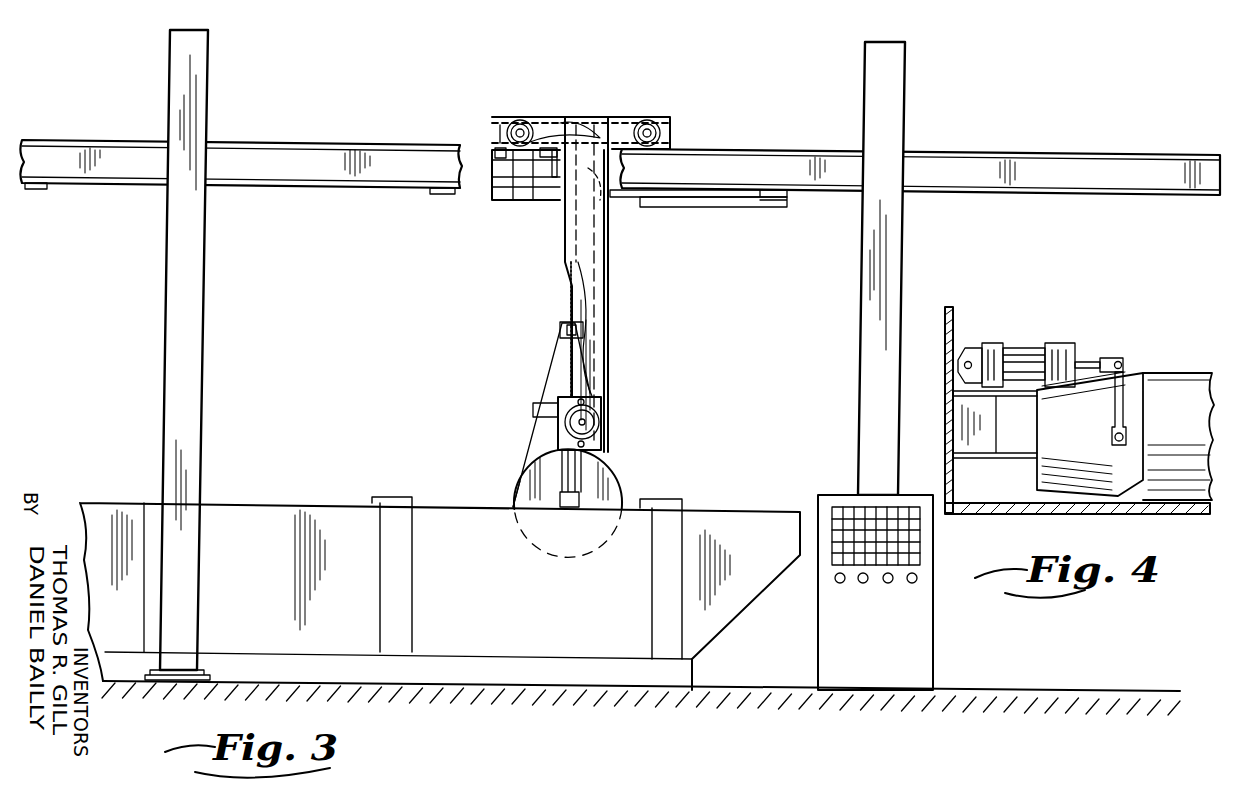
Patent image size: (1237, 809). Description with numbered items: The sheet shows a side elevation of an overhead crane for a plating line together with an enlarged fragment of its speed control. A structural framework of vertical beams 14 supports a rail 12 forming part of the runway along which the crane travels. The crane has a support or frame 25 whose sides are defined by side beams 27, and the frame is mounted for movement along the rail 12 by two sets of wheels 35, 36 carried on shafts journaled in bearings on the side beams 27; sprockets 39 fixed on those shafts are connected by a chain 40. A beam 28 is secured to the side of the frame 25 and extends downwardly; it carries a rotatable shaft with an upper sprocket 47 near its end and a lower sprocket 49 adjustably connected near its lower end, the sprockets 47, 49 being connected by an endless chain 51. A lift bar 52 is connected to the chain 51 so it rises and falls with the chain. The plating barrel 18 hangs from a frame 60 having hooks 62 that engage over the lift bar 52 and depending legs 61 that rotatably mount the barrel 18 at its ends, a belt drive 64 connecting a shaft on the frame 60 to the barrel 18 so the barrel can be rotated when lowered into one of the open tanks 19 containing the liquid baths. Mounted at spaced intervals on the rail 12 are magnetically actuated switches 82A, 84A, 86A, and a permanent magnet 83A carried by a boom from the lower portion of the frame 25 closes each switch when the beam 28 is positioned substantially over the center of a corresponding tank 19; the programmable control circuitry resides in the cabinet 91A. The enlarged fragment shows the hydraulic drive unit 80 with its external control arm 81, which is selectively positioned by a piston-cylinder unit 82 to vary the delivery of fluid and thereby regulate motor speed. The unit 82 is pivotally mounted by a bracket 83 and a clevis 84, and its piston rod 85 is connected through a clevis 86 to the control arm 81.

In FIG. 3, the vertical beams 14 is at (209, 76).
In FIG. 3, the rail 12 is at (742, 149).
In FIG. 3, the magnetically actuated switch 86A is at (36, 190).
In FIG. 3, the magnetically actuated switch 84A is at (445, 195).
In FIG. 3, the support or frame 25 is at (500, 117).
In FIG. 3, the wheels 36 is at (508, 129).
In FIG. 3, the wheels 35 is at (663, 131).
In FIG. 3, the sprockets 39 is at (522, 120).
In FIG. 3, the chain 40 is at (577, 125).
In FIG. 3, the magnetically actuated switch 82A is at (517, 156).
In FIG. 3, the control arm 81 is at (555, 178).
In FIG. 4, the control arm 81 is at (1114, 415).
In FIG. 3, the permanent magnet 83A is at (788, 205).
In FIG. 3, the beam 28 is at (613, 243).
In FIG. 3, the upper sprocket 47 is at (613, 215).
In FIG. 3, the endless chain 51 is at (571, 292).
In FIG. 3, the lift bar 52 is at (560, 328).
In FIG. 3, the hooks 62 is at (548, 366).
In FIG. 3, the belt drive 64 is at (528, 447).
In FIG. 3, the frame 60 is at (533, 410).
In FIG. 3, the lower sprocket 49 is at (605, 418).
In FIG. 3, the plating barrel 18 is at (603, 483).
In FIG. 3, the depending legs 61 is at (583, 508).
In FIG. 3, the tanks 19 is at (470, 500).
In FIG. 3, the cabinet 91A is at (834, 495).
In FIG. 4, the side beams 27 is at (939, 327).
In FIG. 4, the bracket 83 is at (963, 347).
In FIG. 4, the clevis 84 is at (974, 343).
In FIG. 4, the piston-cylinder unit 82 is at (1022, 348).
In FIG. 4, the piston rod 85 is at (1085, 362).
In FIG. 4, the clevis 86 is at (1108, 358).
In FIG. 4, the hydraulic drive unit 80 is at (1172, 374).